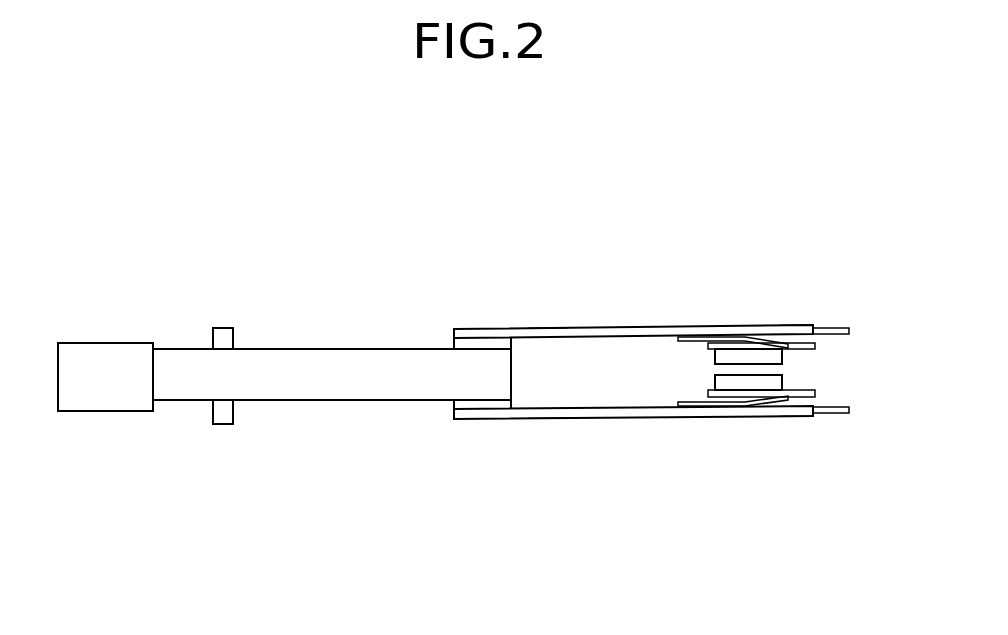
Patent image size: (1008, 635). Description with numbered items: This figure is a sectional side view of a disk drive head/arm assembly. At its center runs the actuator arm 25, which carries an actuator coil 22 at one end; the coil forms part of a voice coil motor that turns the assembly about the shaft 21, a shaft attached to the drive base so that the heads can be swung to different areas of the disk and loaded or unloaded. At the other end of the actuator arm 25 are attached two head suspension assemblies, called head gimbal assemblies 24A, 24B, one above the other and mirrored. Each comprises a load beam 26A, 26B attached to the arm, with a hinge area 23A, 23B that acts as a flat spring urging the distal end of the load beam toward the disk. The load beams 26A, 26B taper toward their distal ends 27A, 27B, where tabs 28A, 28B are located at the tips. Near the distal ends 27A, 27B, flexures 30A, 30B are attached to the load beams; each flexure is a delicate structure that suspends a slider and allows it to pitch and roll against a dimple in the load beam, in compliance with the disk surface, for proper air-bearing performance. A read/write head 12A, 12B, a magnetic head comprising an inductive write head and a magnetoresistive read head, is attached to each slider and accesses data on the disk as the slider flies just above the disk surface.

The read/write head 12A is at (782, 352).
The read/write head 12B is at (782, 386).
The shaft 21 is at (222, 328).
The actuator coil 22 is at (97, 343).
The hinge area 23A is at (568, 313).
The hinge area 23B is at (568, 434).
The head gimbal assembly 24A is at (684, 272).
The head gimbal assembly 24B is at (684, 457).
The actuator arm 25 is at (357, 349).
The load beam 26A is at (647, 277).
The load beam 26B is at (649, 473).
The distal end 27A is at (795, 318).
The distal end 27B is at (798, 428).
The tab 28A is at (838, 328).
The tab 28B is at (833, 413).
The flexure 30A is at (762, 341).
The flexure 30B is at (762, 403).